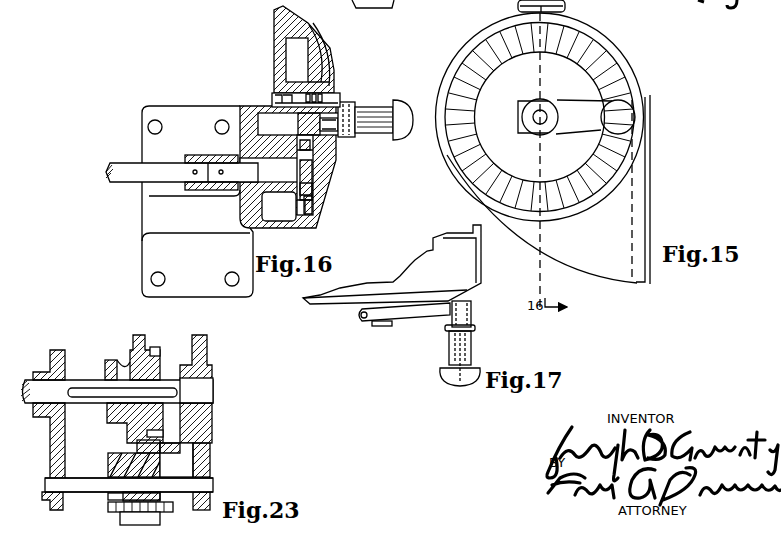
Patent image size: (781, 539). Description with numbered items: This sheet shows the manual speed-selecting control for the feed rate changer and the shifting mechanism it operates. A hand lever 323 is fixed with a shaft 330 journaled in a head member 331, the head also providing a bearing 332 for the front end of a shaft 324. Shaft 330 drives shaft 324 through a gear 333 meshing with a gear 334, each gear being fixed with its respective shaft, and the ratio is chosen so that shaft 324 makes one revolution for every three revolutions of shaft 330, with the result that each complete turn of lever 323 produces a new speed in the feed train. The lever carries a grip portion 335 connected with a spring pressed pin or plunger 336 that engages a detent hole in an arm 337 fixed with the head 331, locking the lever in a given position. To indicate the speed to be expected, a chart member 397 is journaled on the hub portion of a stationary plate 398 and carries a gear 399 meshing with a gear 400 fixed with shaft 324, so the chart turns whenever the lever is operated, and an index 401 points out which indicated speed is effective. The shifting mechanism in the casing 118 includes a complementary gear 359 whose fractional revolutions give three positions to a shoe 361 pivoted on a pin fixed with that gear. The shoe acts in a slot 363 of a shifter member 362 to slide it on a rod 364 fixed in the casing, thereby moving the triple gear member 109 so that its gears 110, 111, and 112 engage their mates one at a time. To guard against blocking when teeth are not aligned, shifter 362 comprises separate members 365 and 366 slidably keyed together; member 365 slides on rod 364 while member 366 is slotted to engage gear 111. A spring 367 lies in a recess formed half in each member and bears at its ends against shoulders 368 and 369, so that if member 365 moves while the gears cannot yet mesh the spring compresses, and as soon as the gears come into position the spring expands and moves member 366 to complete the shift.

In FIG. 23, the triple gear member 109 is at (150, 372).
In FIG. 23, the gear 110 is at (157, 347).
In FIG. 23, the gear 111 is at (135, 340).
In FIG. 23, the gear 112 is at (107, 362).
In FIG. 23, the unitary casing 118 is at (210, 458).
In FIG. 16, the lever 323 is at (340, 103).
In FIG. 15, the lever 323 is at (585, 123).
In FIG. 17, the lever 323 is at (418, 318).
In FIG. 16, the shaft 324 is at (133, 160).
In FIG. 16, the shaft 330 is at (330, 140).
In FIG. 16, the head member 331 is at (271, 62).
In FIG. 15, the head member 331 is at (601, 258).
In FIG. 16, the bearing 332 is at (279, 206).
In FIG. 16, the gear 333 is at (272, 103).
In FIG. 16, the gear 334 is at (333, 198).
In FIG. 16, the grip portion 335 is at (378, 134).
In FIG. 17, the spring pressed pin or plunger 336 is at (472, 318).
In FIG. 17, the arm 337 is at (466, 302).
In FIG. 23, the complementary gear 359 is at (105, 512).
In FIG. 23, the shoe 361 is at (160, 510).
In FIG. 23, the shifter member 362 is at (170, 450).
In FIG. 23, the slot 363 is at (110, 497).
In FIG. 23, the rod 364 is at (208, 484).
In FIG. 23, the member 365 is at (163, 497).
In FIG. 23, the member 366 is at (118, 440).
In FIG. 23, the spring 367 is at (108, 455).
In FIG. 23, the shoulder 368 is at (108, 468).
In FIG. 23, the shoulder 369 is at (177, 460).
In FIG. 16, the chart member 397 is at (318, 40).
In FIG. 16, the stationary plate 398 is at (326, 74).
In FIG. 16, the gear 399 is at (311, 78).
In FIG. 16, the gear 400 is at (330, 188).
In FIG. 15, the index 401 is at (568, 5).